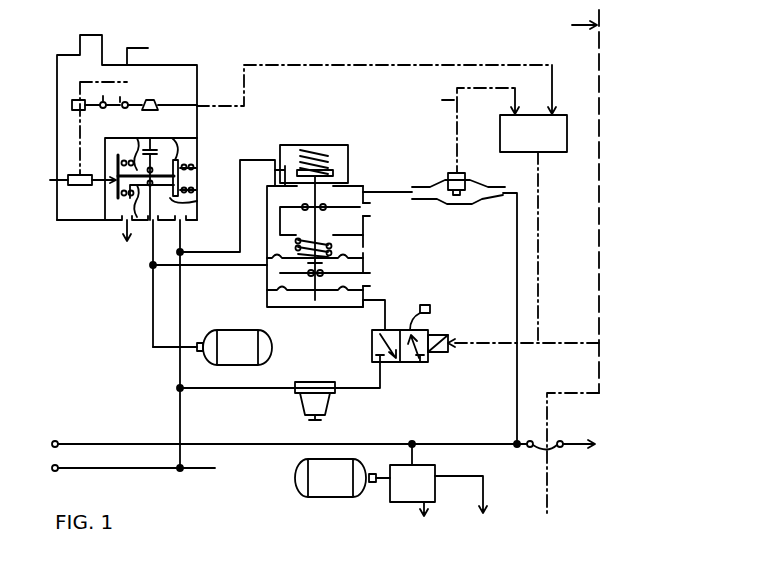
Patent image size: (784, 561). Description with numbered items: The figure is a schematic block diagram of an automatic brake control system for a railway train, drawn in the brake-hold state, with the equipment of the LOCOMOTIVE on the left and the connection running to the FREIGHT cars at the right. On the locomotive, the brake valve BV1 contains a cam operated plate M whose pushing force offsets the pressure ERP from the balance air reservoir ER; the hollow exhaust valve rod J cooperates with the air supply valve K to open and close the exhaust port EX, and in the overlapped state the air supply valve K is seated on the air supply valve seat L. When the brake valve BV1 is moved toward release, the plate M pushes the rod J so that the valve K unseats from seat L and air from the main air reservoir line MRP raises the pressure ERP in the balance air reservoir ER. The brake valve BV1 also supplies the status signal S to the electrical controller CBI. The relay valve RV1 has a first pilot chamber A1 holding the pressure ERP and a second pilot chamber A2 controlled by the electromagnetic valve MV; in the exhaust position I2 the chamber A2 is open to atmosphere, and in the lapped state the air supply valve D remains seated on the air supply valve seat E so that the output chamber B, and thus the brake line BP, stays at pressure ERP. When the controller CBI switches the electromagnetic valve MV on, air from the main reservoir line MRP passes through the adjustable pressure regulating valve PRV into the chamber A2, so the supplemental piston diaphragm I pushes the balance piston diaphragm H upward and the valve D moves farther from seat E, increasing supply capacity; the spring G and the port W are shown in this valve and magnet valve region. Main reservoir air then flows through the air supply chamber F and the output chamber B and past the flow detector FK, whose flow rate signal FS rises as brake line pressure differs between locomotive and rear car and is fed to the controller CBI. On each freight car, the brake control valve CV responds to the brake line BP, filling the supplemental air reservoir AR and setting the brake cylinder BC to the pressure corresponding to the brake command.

The brake valve BV1 is at (163, 62).
The cam operated plate M is at (76, 180).
The air supply valve K is at (197, 203).
The hollow exhaust valve rod J is at (137, 140).
The air supply valve seat L is at (172, 130).
The exhaust port EX is at (278, 375).
The balance air reservoir pressure ERP is at (153, 265).
The status signal S is at (339, 64).
The relay valve RV1 is at (335, 145).
The air supply chamber F is at (287, 144).
The air supply valve seat E is at (348, 178).
The air supply valve D is at (275, 176).
The output chamber B is at (381, 184).
The spring G is at (290, 232).
The balance piston diaphragm H is at (368, 250).
The first pilot chamber A1 is at (274, 272).
The supplemental piston diaphragm I is at (272, 301).
The second pilot chamber A2 is at (334, 308).
The flow rate signal FS is at (468, 130).
The flow detector FK is at (471, 205).
The electrical controller CBI is at (533, 229).
The locomotive LOCOMOTIVE is at (509, 262).
The electromagnetic valve MV is at (432, 335).
The valve port W is at (280, 362).
The exhaust position I2 is at (398, 362).
The balance air reservoir ER is at (212, 347).
The adjustable pressure regulating valve PRV is at (300, 409).
The brake line BP is at (121, 442).
The main air reservoir line MRP is at (200, 470).
The freight car FREIGHT is at (643, 443).
The supplemental air reservoir AR is at (342, 478).
The brake control valve CV is at (412, 473).
The brake cylinder BC is at (467, 512).